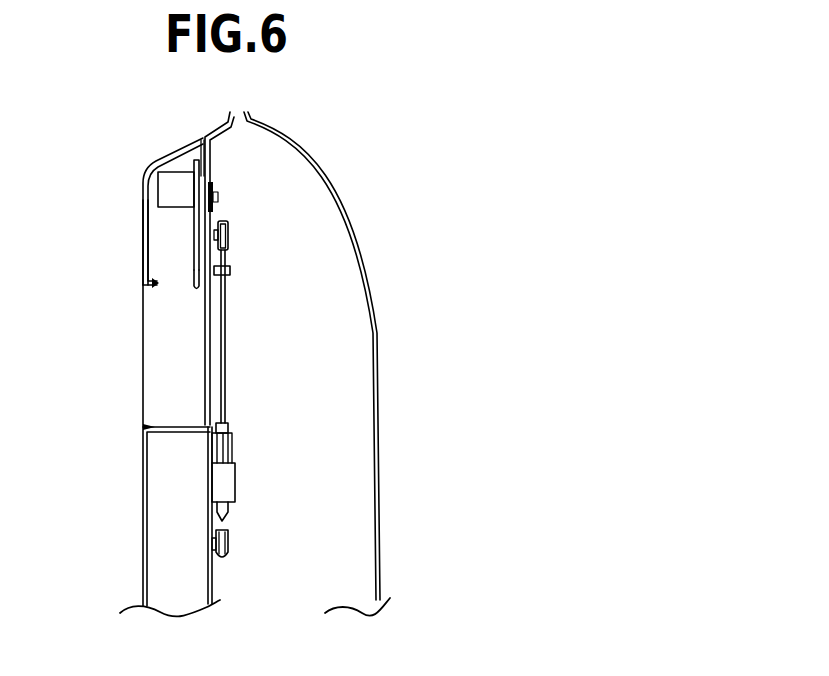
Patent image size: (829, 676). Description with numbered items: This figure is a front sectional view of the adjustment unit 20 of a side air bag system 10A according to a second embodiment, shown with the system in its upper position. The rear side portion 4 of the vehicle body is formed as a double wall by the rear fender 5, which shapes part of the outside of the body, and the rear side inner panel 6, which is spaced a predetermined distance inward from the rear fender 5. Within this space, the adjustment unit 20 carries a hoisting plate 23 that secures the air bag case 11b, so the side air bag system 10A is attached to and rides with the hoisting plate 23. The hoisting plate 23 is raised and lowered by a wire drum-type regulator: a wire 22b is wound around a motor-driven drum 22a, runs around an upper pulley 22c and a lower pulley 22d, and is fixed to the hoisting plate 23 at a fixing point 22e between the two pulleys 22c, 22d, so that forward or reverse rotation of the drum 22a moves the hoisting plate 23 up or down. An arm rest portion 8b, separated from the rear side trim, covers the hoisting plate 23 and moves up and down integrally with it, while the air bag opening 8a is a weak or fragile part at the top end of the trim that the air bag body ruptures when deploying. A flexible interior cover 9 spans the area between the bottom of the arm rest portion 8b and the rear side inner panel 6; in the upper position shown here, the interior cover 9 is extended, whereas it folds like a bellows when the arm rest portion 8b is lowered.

The rear side portion 4 is at (153, 356).
The rear fender 5 is at (379, 538).
The rear side inner panel 6 is at (142, 576).
The air bag opening 8a is at (178, 153).
The arm rest portion 8b is at (143, 221).
The interior cover 9 is at (142, 372).
The side air bag system 10A is at (278, 334).
The air bag case 11b is at (174, 208).
The adjustment unit 20 is at (269, 467).
The drum 22a is at (236, 482).
The wire 22b is at (227, 322).
The pulley 22c is at (232, 242).
The pulley 22d is at (230, 548).
The fixing point 22e is at (232, 272).
The hoisting plate 23 is at (198, 274).